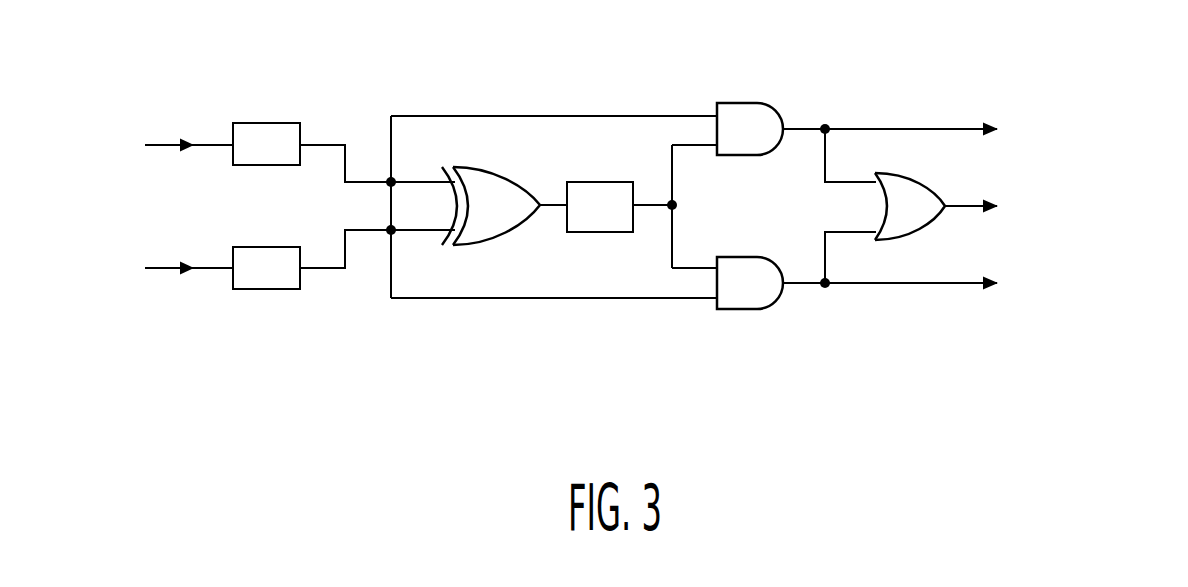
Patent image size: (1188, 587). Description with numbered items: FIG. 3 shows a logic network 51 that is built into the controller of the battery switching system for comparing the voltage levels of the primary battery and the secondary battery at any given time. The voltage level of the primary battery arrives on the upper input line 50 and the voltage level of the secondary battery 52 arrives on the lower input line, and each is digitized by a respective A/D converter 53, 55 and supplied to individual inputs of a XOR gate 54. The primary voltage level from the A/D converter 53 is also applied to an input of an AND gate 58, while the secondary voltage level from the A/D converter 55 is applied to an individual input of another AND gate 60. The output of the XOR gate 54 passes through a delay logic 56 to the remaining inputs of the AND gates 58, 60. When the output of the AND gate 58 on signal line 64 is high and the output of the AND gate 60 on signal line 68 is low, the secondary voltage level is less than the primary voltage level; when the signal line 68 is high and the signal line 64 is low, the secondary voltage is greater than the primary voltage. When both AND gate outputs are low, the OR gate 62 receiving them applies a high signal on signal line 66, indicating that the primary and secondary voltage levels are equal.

The logic network 51 is at (570, 33).
The input line from battery 20 50 is at (203, 143).
The secondary battery 52 is at (203, 270).
The A/D converter 53 is at (262, 123).
The A/D converter 55 is at (270, 289).
The XOR gate 54 is at (510, 236).
The delay logic 56 is at (595, 182).
The AND gate 58 is at (737, 103).
The AND gate 60 is at (735, 309).
The OR gate 62 is at (927, 179).
The signal line 64 is at (927, 128).
The signal line 66 is at (967, 208).
The signal line 68 is at (943, 284).